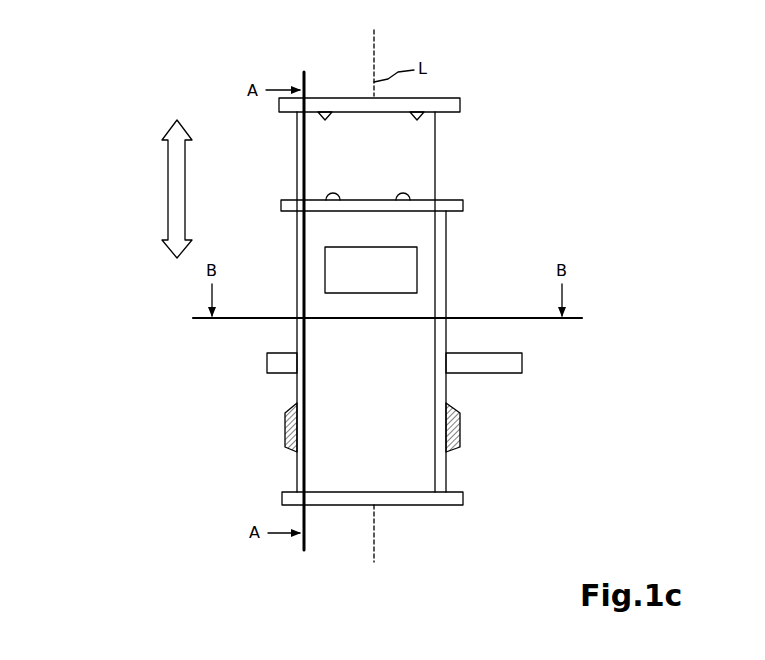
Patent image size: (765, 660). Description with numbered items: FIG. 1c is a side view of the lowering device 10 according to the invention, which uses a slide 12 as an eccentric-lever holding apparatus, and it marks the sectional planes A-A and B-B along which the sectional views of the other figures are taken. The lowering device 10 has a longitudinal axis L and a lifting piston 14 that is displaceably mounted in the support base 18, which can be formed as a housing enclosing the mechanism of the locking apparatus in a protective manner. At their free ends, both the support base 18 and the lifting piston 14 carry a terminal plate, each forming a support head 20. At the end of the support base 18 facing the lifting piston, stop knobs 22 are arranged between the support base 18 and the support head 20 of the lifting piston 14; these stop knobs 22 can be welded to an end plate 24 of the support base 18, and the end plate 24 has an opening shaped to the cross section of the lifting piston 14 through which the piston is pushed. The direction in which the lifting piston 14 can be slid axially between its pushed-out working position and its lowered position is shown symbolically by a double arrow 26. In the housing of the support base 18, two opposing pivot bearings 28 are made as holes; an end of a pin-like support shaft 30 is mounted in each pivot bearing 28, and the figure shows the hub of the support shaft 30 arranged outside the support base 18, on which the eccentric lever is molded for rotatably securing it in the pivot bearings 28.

The lowering device 10 is at (128, 100).
The slide 12 is at (520, 360).
The lifting piston 14 is at (316, 163).
The support base 18 is at (447, 244).
The support head 20 is at (445, 105).
The stop knobs 22 is at (410, 192).
The end plate 24 is at (292, 203).
The double arrow 26 is at (147, 189).
The pivot bearings 28 is at (290, 450).
The support shaft 30 is at (283, 423).